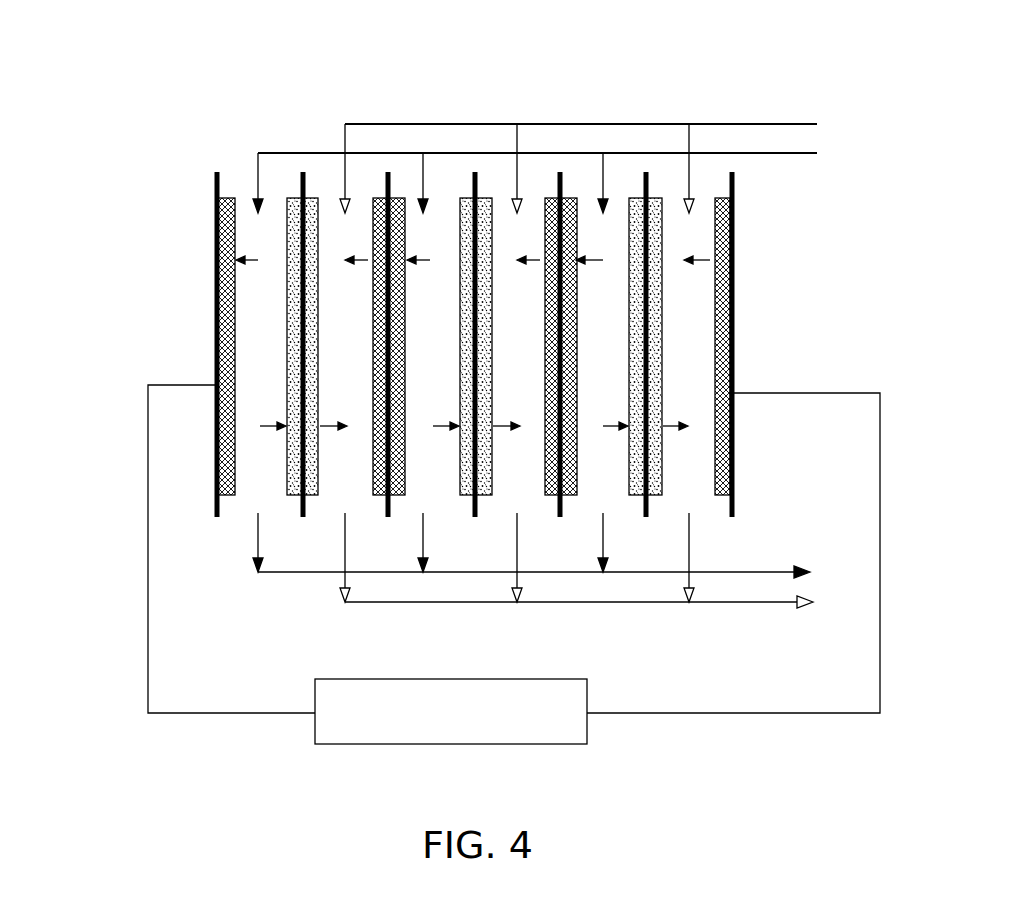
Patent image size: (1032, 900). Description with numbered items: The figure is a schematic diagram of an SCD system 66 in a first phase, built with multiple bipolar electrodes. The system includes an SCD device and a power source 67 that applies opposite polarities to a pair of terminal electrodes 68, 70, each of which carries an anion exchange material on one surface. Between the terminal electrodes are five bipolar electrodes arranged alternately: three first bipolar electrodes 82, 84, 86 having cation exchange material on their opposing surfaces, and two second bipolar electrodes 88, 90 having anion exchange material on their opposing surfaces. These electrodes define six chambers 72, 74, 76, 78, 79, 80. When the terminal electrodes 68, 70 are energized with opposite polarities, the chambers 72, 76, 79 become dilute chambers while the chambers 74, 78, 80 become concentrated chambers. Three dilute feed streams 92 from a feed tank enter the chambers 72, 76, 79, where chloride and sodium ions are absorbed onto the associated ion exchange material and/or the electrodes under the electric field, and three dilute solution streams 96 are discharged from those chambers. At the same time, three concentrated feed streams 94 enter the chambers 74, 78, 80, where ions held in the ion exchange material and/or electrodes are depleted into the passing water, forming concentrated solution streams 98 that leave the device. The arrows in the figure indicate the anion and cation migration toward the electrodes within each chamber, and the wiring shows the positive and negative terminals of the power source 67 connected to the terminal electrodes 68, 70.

The SCD system 66 is at (147, 53).
The power source 67 is at (452, 679).
The terminal electrode 68 is at (217, 193).
The terminal electrode 70 is at (735, 187).
The chamber 72 is at (246, 353).
The chamber 74 is at (332, 353).
The chamber 76 is at (417, 353).
The chamber 78 is at (503, 353).
The chamber 79 is at (589, 353).
The chamber 80 is at (675, 353).
The first bipolar electrode 82 is at (300, 183).
The first bipolar electrode 84 is at (473, 183).
The first bipolar electrode 86 is at (648, 180).
The second bipolar electrode 88 is at (386, 505).
The second bipolar electrode 90 is at (558, 505).
The dilute feed stream 92 is at (380, 152).
The concentrated feed stream 94 is at (580, 124).
The dilute solution stream 96 is at (763, 571).
The concentrated solution stream 98 is at (727, 603).